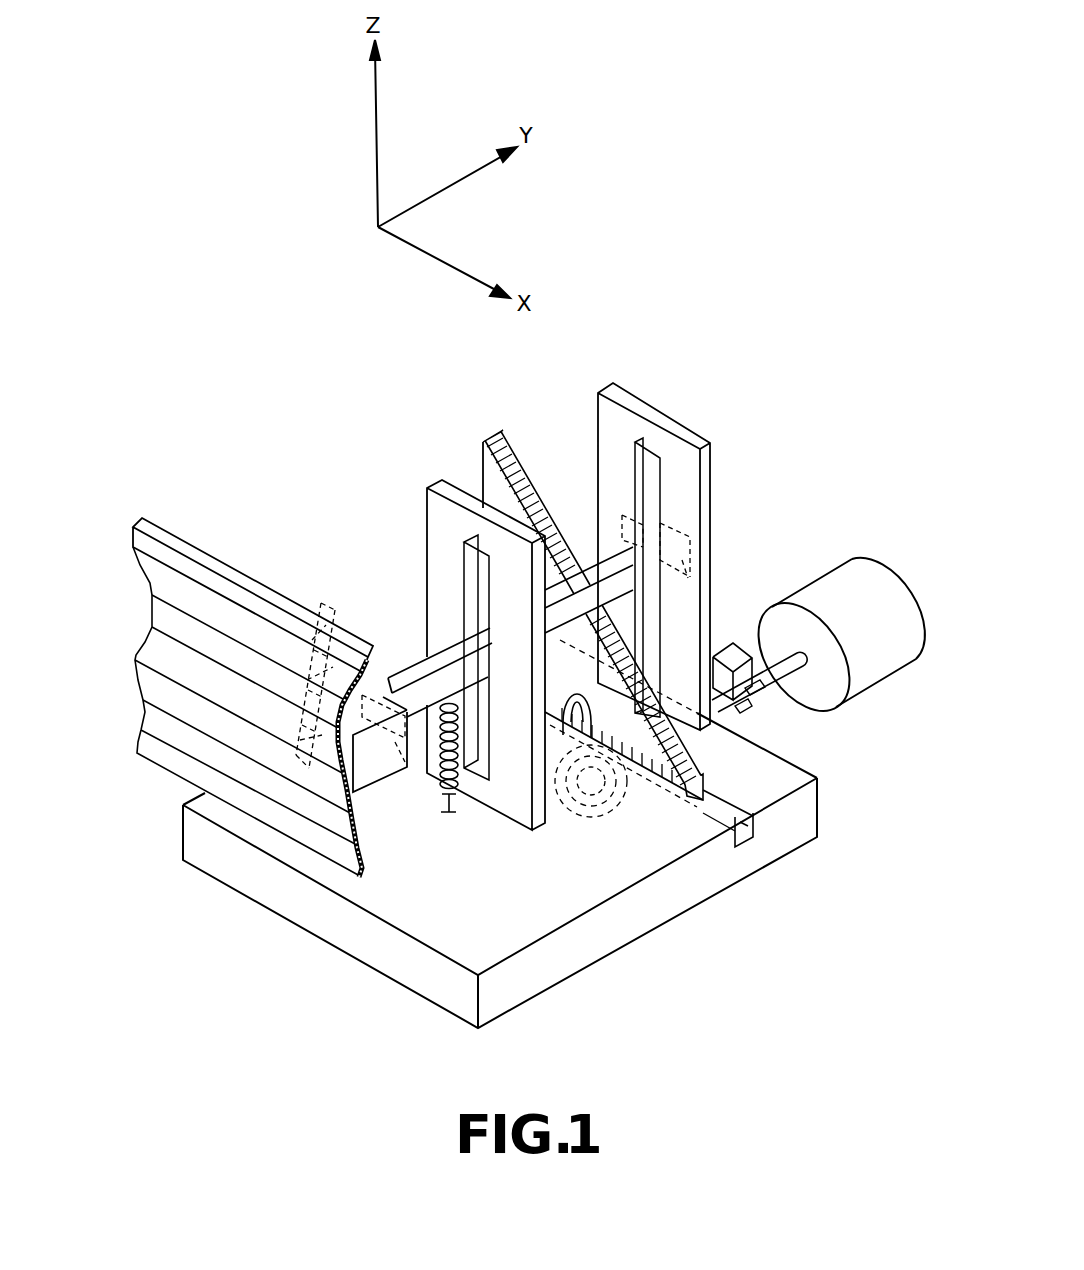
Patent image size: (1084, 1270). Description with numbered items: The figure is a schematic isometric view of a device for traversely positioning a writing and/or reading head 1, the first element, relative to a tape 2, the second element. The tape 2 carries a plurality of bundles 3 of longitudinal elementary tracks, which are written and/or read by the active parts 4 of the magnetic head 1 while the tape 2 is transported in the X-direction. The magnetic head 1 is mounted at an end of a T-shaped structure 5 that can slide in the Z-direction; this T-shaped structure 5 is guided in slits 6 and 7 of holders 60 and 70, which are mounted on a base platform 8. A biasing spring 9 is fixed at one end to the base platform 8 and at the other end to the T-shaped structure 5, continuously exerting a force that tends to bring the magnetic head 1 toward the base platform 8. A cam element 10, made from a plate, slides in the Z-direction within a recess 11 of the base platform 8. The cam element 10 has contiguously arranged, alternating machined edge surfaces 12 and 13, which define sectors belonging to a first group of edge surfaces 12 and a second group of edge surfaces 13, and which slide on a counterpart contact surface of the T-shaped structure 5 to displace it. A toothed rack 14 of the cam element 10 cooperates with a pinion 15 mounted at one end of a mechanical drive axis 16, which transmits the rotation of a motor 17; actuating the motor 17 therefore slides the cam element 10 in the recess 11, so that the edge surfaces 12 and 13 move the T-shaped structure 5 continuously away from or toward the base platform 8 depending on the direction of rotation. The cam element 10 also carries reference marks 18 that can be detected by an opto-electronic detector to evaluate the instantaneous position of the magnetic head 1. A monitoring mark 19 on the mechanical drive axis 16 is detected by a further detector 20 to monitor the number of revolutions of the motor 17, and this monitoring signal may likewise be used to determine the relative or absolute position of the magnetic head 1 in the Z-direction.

The writing and/or reading head 1 is at (375, 757).
The tape 2 is at (167, 533).
The bundles of longitudinal elementary tracks 3 is at (222, 612).
The active parts 4 is at (318, 632).
The T-shaped structure 5 is at (600, 567).
The slit 6 is at (478, 562).
The slit 7 is at (648, 462).
The base platform 8 is at (535, 913).
The biasing spring 9 is at (455, 773).
The cam element 10 is at (497, 482).
The recess 11 is at (760, 826).
The edge surfaces 12 is at (512, 435).
The edge surfaces 13 is at (526, 480).
The toothed rack 14 is at (670, 813).
The pinion 15 is at (616, 808).
The mechanical drive axis 16 is at (748, 708).
The motor 17 is at (893, 603).
The reference marks 18 is at (555, 705).
The monitoring mark 19 is at (778, 697).
The detector 20 is at (733, 647).
The holder 60 is at (440, 555).
The holder 70 is at (683, 457).